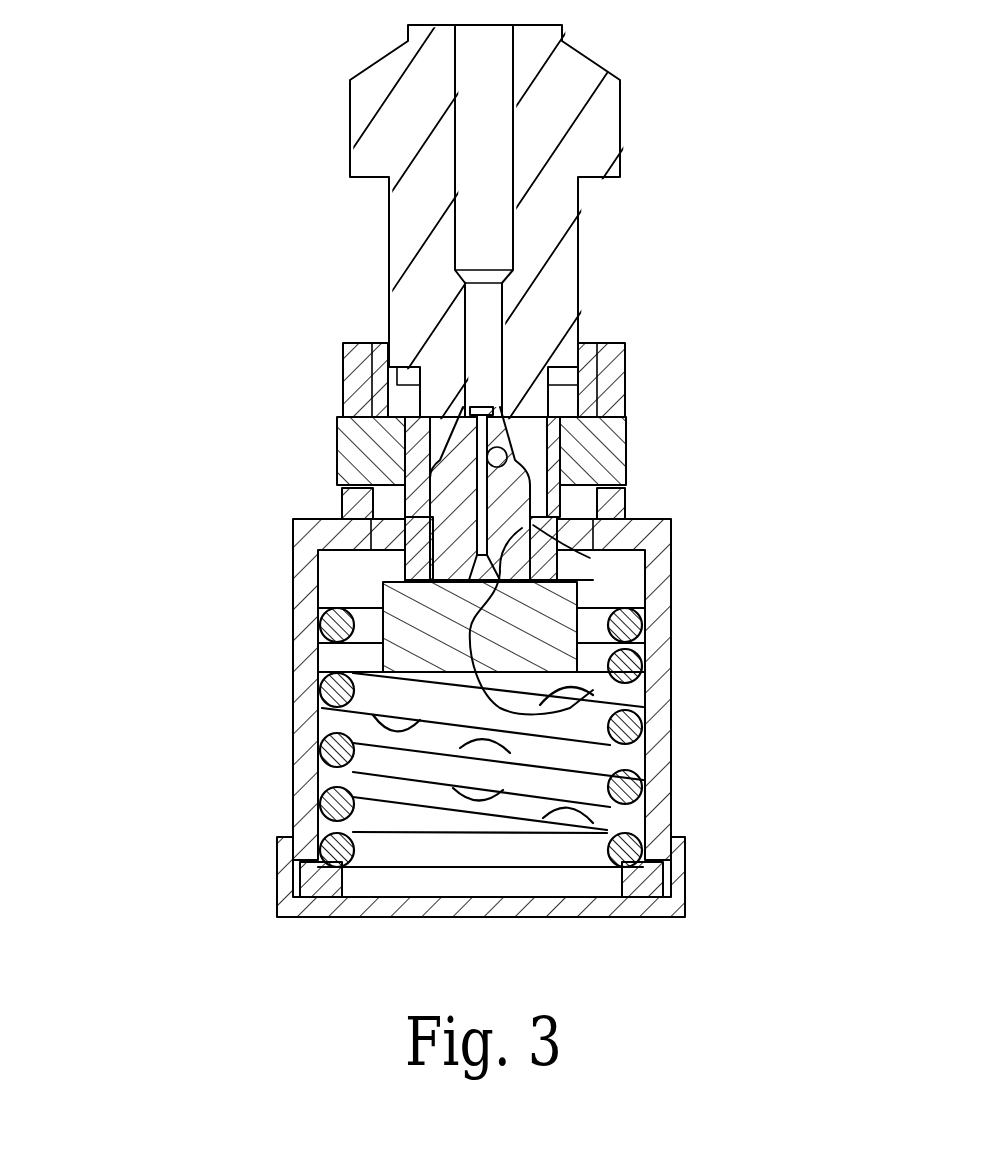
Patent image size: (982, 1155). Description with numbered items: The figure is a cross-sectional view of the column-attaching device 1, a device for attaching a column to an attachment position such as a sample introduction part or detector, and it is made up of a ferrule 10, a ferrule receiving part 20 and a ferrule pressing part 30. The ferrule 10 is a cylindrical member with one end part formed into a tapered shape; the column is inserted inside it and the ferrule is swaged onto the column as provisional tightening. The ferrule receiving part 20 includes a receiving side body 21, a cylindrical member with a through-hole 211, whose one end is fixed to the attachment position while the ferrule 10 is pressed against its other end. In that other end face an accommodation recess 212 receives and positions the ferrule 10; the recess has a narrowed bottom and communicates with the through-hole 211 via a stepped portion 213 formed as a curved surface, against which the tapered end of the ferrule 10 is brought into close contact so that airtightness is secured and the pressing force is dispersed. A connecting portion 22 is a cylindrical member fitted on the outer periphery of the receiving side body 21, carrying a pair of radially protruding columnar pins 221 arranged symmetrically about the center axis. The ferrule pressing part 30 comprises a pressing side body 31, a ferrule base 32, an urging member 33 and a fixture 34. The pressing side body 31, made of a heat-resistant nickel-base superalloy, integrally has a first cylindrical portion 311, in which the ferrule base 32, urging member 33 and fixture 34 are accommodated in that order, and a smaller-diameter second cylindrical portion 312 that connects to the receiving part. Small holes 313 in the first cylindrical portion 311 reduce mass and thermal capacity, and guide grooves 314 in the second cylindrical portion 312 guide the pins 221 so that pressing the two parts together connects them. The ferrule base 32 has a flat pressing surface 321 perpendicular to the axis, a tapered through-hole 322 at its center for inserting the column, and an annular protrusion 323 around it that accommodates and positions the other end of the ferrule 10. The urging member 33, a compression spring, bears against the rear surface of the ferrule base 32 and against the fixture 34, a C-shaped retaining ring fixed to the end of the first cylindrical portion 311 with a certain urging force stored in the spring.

The column-attaching device 1 is at (294, 77).
The ferrule 10 is at (440, 537).
The ferrule receiving part 20 is at (187, 217).
The receiving side body 21 is at (400, 215).
The connecting portion 22 is at (390, 398).
The through-hole 211 is at (497, 310).
The accommodation recess 212 is at (548, 508).
The stepped portion 213 is at (505, 461).
The pins 221 is at (348, 459).
The ferrule pressing part 30 is at (138, 627).
The pressing side body 31 is at (293, 613).
The ferrule base 32 is at (479, 629).
The urging member 33 is at (320, 808).
The fixture 34 is at (292, 878).
The first cylindrical portion 311 is at (672, 820).
The second cylindrical portion 312 is at (620, 358).
The small holes 313 is at (663, 722).
The guide grooves 314 is at (345, 494).
The pressing surface 321 is at (528, 558).
The through-hole 322 is at (600, 706).
The annular protrusion 323 is at (637, 638).